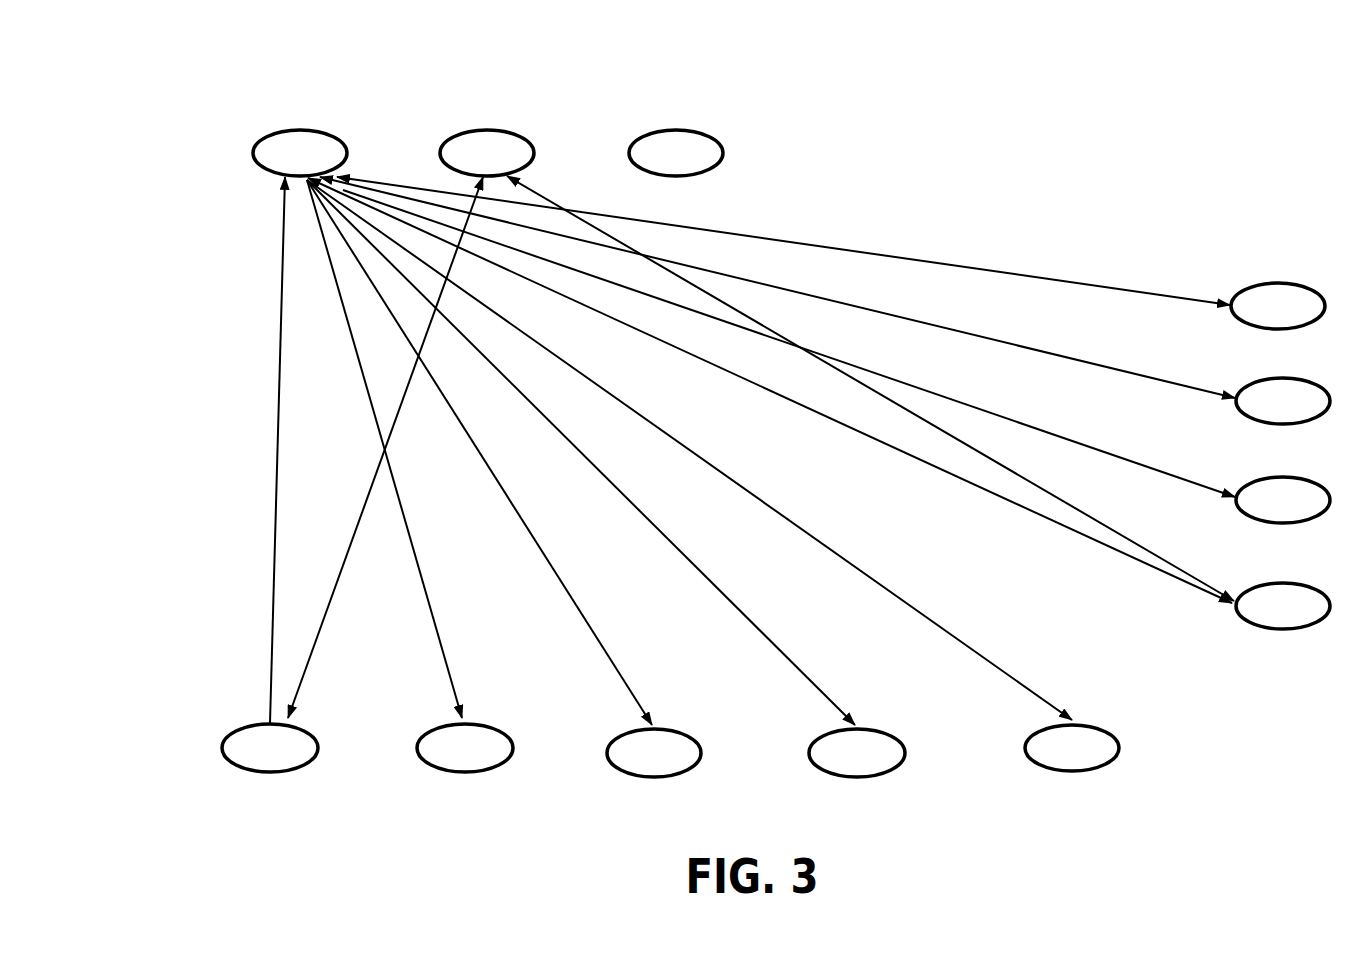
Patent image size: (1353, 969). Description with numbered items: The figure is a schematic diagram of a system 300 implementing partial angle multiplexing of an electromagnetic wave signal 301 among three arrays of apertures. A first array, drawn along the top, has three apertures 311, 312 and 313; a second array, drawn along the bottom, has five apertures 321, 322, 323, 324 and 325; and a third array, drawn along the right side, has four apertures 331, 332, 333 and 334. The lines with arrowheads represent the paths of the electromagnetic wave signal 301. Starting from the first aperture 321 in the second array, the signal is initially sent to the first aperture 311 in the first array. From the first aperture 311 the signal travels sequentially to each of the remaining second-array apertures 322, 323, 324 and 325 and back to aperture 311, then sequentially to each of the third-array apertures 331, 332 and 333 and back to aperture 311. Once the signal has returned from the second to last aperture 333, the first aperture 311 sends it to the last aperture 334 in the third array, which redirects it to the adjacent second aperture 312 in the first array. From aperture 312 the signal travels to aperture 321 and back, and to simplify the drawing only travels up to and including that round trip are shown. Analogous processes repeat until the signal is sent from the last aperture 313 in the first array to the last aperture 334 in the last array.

The system 300 is at (360, 85).
The electromagnetic wave signal 301 is at (275, 612).
The first aperture in the first array 311 is at (300, 153).
The second aperture in the first array 312 is at (487, 153).
The last aperture in the first array 313 is at (676, 153).
The first aperture in the second array 321 is at (270, 748).
The second aperture in the second array 322 is at (465, 748).
The third aperture in the second array 323 is at (654, 753).
The fourth aperture in the second array 324 is at (857, 753).
The last aperture in the second array 325 is at (1072, 748).
The first aperture in the third array 331 is at (1278, 306).
The second aperture in the third array 332 is at (1283, 401).
The second to last aperture in the third array 333 is at (1283, 500).
The last aperture in the third array 334 is at (1283, 606).